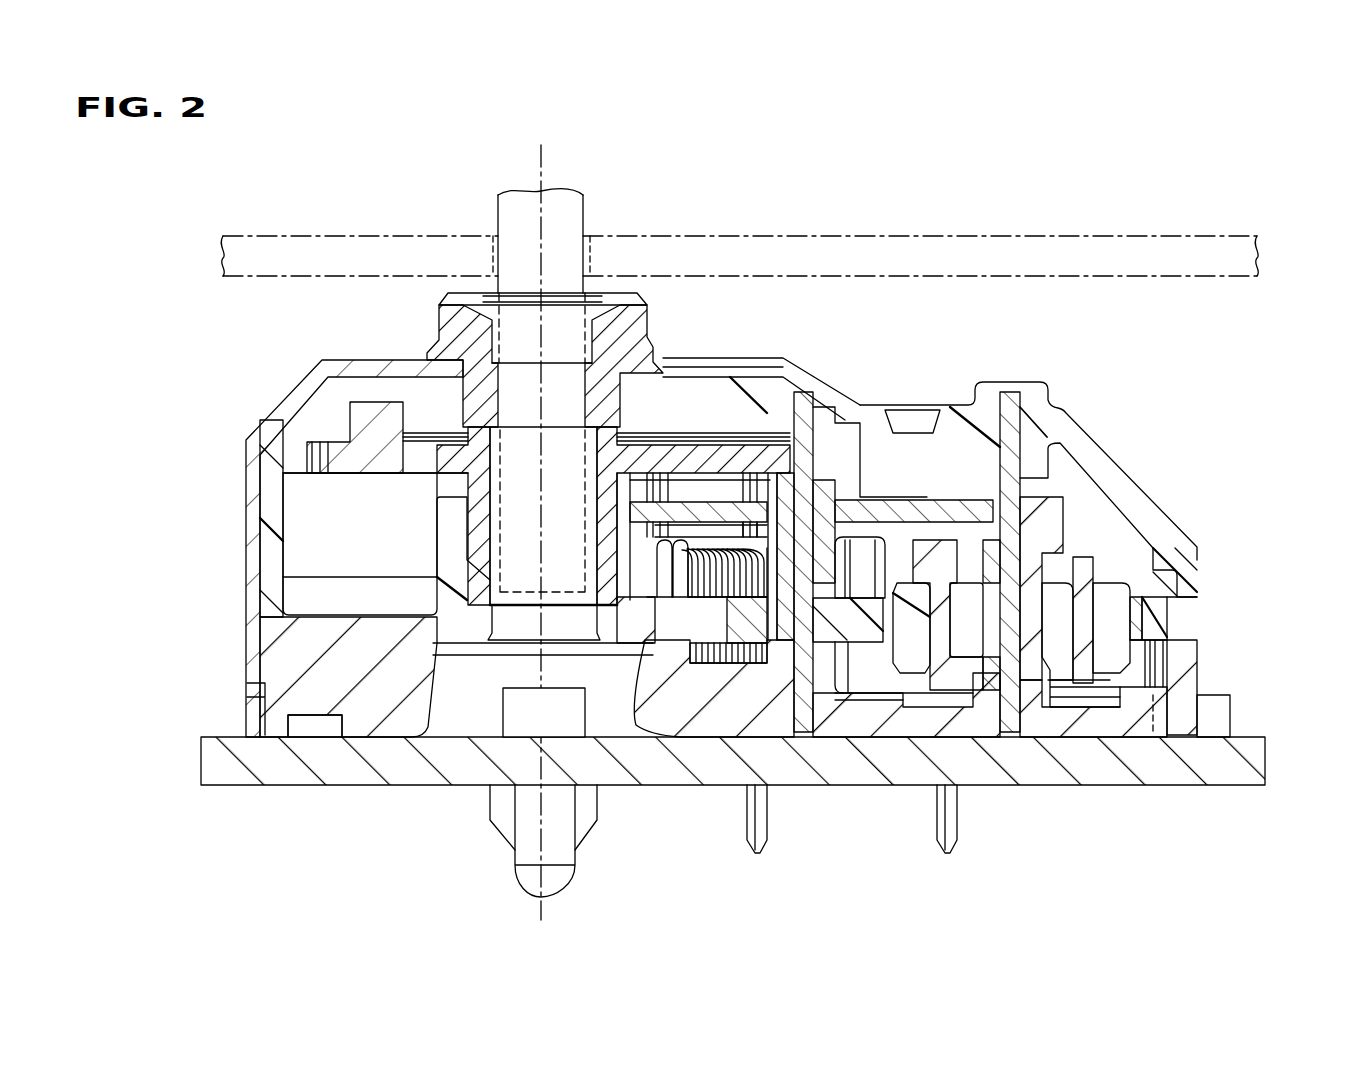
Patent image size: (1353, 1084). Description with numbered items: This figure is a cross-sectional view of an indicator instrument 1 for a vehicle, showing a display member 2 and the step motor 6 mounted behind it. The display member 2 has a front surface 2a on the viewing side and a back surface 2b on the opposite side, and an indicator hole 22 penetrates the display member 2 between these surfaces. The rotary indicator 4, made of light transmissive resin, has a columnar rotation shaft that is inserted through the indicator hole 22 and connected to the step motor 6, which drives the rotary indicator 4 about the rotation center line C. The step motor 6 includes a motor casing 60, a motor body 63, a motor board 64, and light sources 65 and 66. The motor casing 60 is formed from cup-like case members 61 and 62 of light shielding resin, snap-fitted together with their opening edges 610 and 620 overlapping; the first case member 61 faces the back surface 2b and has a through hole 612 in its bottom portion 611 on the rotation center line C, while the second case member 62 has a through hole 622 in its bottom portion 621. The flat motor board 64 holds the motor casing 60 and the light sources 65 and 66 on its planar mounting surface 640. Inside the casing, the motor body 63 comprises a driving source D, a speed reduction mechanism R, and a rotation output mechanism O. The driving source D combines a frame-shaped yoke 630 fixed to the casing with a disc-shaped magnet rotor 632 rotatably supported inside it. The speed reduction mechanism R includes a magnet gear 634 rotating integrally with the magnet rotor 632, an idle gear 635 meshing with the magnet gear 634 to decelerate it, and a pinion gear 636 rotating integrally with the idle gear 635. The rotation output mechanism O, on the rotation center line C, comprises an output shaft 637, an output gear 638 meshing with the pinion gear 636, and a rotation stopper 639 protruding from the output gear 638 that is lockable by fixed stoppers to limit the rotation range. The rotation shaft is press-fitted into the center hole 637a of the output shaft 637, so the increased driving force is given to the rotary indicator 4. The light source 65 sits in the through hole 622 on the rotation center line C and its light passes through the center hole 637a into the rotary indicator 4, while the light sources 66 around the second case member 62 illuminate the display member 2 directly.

The indicator instrument 1 is at (200, 188).
The display member 2 is at (345, 240).
The front surface 2a is at (1204, 236).
The back surface 2b is at (1204, 276).
The indicator hole 22 is at (500, 255).
The rotary indicator 4 is at (583, 210).
The rotation center line C is at (545, 167).
The step motor 6 is at (282, 398).
The motor casing 60 is at (1290, 583).
The case member 61 is at (1183, 568).
The case member 62 is at (1190, 667).
The motor body 63 is at (1068, 180).
The rotation output mechanism O is at (702, 416).
The speed reduction mechanism R is at (860, 486).
The driving source D is at (1065, 566).
The motor board 64 is at (1266, 760).
The light source 65 is at (520, 717).
The light source 66 is at (1233, 715).
The opening edge 610 is at (257, 620).
The bottom portion 611 is at (663, 358).
The through hole 612 is at (425, 365).
The opening edge 620 is at (272, 578).
The bottom portion 621 is at (378, 700).
The through hole 622 is at (643, 655).
The yoke 630 is at (1155, 632).
The magnet rotor 632 is at (1107, 633).
The magnet gear 634 is at (975, 530).
The idle gear 635 is at (873, 540).
The pinion gear 636 is at (785, 560).
The output shaft 637 is at (478, 490).
The center hole 637a is at (590, 327).
The output gear 638 is at (340, 455).
The rotation stopper 639 is at (365, 418).
The mounting surface 640 is at (248, 727).